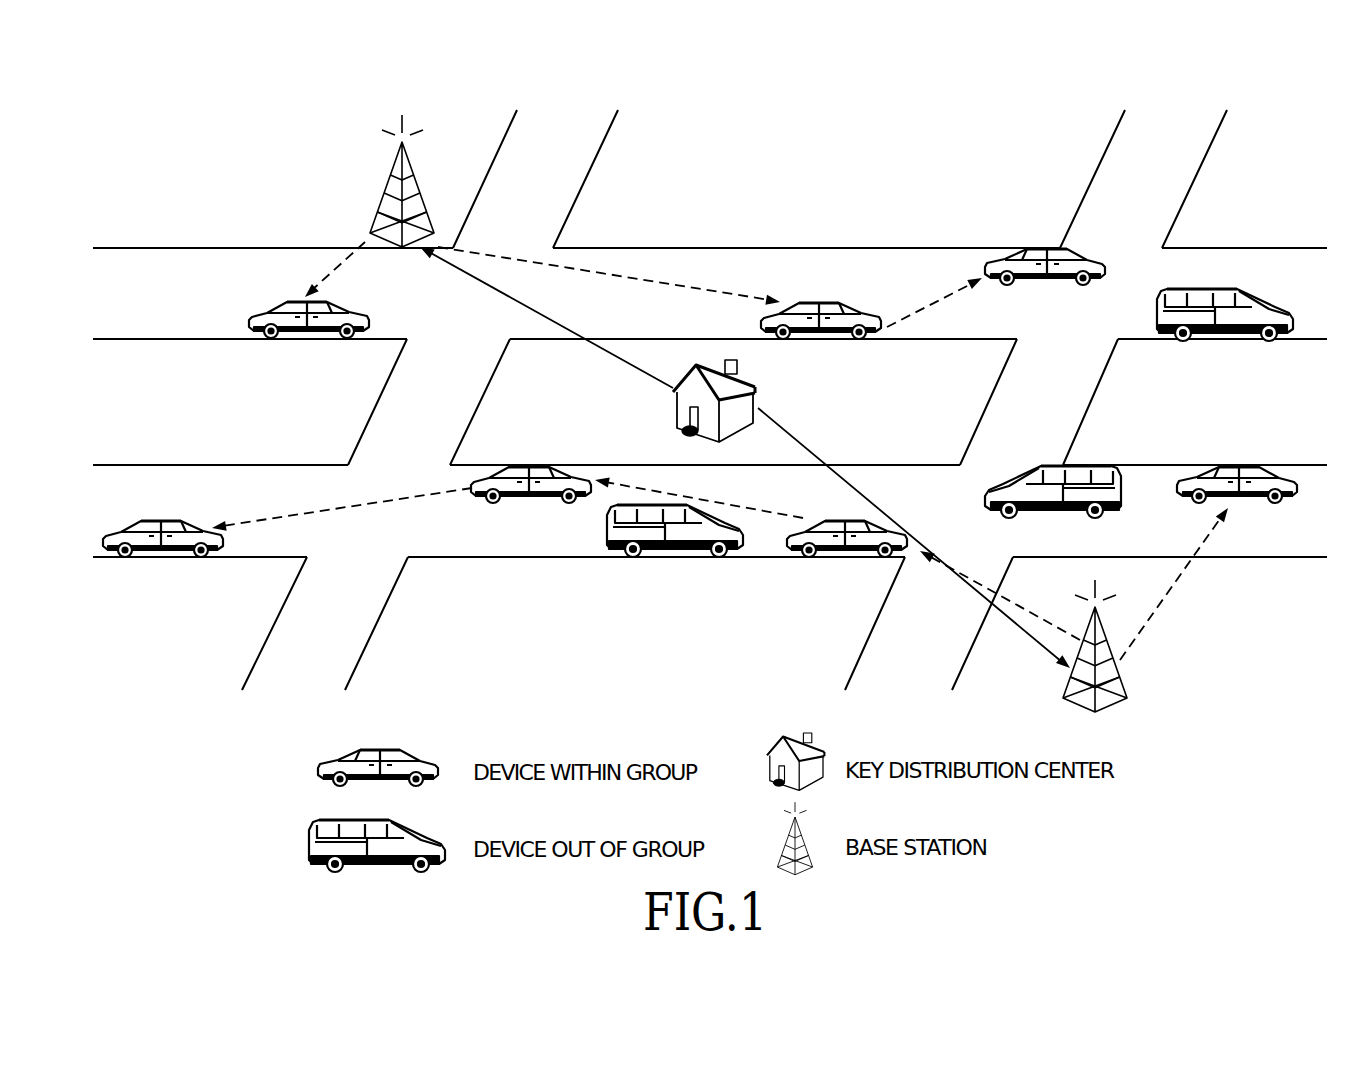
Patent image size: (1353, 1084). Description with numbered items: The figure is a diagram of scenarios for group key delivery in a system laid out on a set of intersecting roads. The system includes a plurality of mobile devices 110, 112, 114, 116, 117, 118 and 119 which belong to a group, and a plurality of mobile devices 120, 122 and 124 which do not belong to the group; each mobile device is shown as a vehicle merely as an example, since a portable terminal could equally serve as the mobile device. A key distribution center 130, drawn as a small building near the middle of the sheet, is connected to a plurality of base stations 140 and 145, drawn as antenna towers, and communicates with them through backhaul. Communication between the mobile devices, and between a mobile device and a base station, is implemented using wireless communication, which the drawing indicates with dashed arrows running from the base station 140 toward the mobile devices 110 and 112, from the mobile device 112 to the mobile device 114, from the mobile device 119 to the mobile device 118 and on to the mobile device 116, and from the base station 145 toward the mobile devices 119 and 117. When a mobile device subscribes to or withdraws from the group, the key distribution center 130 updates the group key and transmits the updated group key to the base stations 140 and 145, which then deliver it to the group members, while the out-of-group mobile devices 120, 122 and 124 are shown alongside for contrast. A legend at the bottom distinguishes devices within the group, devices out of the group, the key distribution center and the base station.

The mobile device 110 is at (357, 311).
The mobile device 112 is at (815, 298).
The mobile device 114 is at (1085, 246).
The mobile device 116 is at (158, 515).
The mobile device 117 is at (1194, 503).
The mobile device 118 is at (513, 503).
The mobile device 119 is at (825, 518).
The mobile device 120 is at (607, 530).
The mobile device 122 is at (1002, 516).
The mobile device 124 is at (1255, 293).
The key distribution center 130 is at (751, 377).
The base station 140 is at (420, 168).
The base station 145 is at (1127, 685).